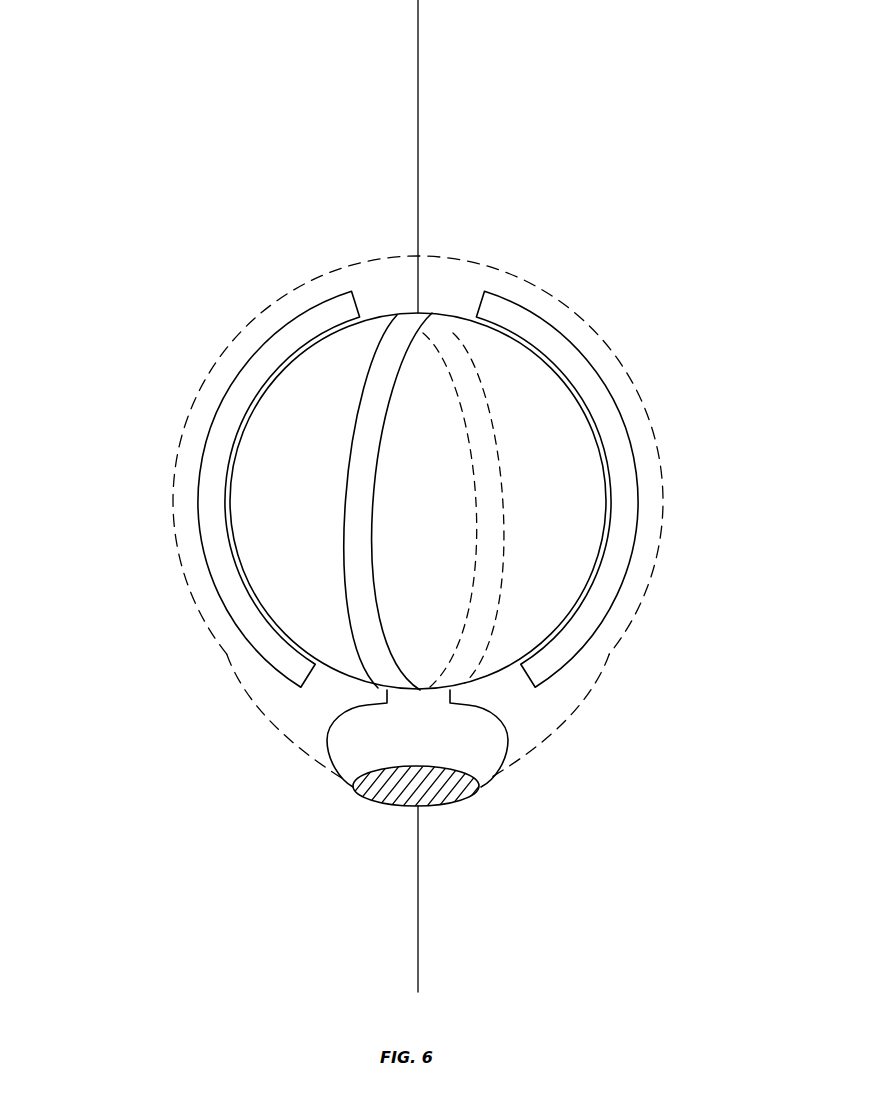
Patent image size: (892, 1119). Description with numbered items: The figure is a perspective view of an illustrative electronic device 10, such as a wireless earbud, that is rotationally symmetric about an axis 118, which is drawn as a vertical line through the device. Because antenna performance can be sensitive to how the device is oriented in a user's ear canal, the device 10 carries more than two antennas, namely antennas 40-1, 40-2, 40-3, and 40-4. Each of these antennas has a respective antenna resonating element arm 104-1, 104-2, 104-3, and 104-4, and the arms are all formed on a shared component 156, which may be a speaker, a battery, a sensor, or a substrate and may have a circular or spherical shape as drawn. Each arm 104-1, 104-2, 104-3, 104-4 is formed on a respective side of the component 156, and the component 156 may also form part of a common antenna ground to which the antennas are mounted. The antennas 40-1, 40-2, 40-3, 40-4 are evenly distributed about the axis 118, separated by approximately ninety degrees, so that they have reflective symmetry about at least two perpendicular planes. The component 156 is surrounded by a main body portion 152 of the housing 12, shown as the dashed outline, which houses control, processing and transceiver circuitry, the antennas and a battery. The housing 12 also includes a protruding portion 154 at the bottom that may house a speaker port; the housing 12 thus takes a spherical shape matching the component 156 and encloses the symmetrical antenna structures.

The electronic device 10 is at (504, 80).
The housing 12 is at (179, 430).
The axis 118 is at (417, 19).
The component 156 is at (260, 540).
The antenna 40-1 is at (295, 345).
The antenna 40-2 is at (372, 340).
The antenna 40-3 is at (529, 306).
The antenna 40-4 is at (448, 331).
The antenna resonating element arm 104-1 is at (263, 648).
The antenna resonating element arm 104-2 is at (363, 630).
The antenna resonating element arm 104-3 is at (562, 646).
The antenna resonating element arm 104-4 is at (477, 633).
The main body portion 152 is at (717, 285).
The protruding portion 154 is at (670, 680).